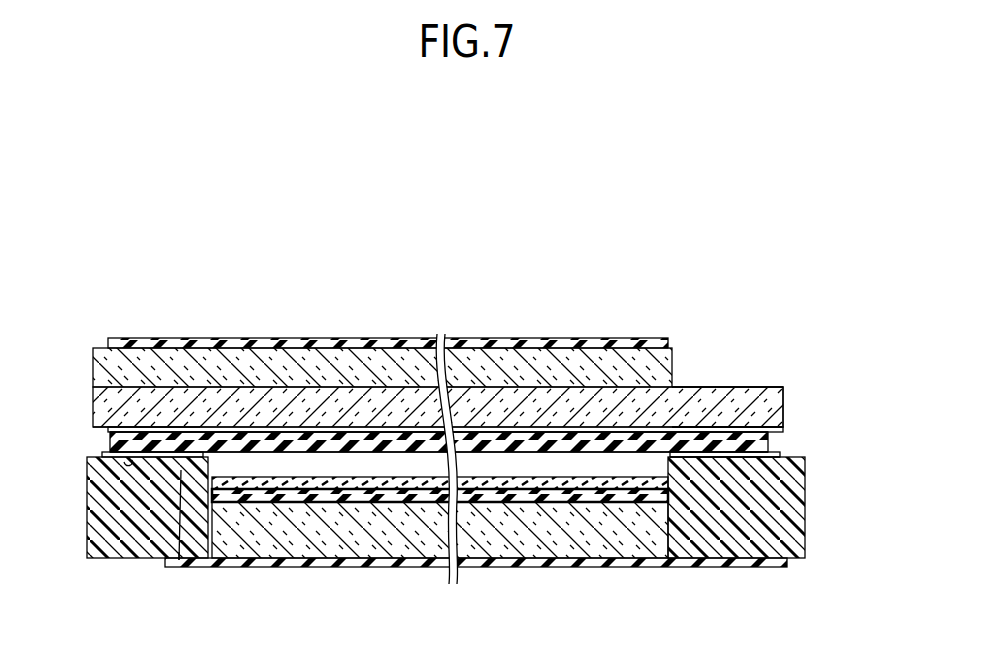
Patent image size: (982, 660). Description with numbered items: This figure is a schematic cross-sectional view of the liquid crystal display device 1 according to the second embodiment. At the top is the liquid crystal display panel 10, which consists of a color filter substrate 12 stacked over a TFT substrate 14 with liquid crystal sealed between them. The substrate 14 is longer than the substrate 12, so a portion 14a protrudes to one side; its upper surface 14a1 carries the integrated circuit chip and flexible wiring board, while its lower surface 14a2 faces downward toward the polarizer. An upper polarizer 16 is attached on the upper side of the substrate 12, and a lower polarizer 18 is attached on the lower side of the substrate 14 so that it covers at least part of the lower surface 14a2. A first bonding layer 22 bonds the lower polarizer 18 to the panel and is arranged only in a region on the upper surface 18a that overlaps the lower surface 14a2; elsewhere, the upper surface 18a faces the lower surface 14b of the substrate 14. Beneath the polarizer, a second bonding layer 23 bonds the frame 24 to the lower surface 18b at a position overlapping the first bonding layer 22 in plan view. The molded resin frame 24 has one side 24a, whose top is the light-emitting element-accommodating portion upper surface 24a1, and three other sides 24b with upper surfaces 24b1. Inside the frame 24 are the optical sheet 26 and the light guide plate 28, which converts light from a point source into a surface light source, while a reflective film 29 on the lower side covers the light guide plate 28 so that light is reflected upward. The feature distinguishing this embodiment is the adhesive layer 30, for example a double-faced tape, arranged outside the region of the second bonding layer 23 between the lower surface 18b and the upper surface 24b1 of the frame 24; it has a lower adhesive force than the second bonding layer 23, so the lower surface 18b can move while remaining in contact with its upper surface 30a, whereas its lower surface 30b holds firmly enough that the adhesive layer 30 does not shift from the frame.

The liquid crystal display device 1 is at (612, 243).
The liquid crystal display panel 10 is at (305, 291).
The substrate 12 is at (321, 363).
The substrate 14 is at (388, 408).
The portion 14a is at (762, 403).
The upper surface 14a1 is at (731, 388).
The lower surface 14a2 is at (703, 433).
The lower surface 14b is at (161, 443).
The upper polarizer 16 is at (617, 341).
The lower polarizer 18 is at (571, 441).
The upper surface 18a is at (629, 449).
The lower surface 18b is at (518, 455).
The first bonding layer 22 is at (760, 427).
The second bonding layer 23 is at (762, 455).
The frame 24 is at (438, 542).
The one side 24a is at (764, 545).
The light-emitting element-accommodating portion upper surface 24a1 is at (782, 455).
The other three sides 24b is at (120, 545).
The upper surfaces 24b1 is at (102, 455).
The optical sheet 26 is at (300, 510).
The light guide plate 28 is at (553, 540).
The reflective film 29 is at (481, 562).
The adhesive layer 30 is at (181, 470).
The upper surface 30a is at (179, 560).
The lower surface 30b is at (124, 462).